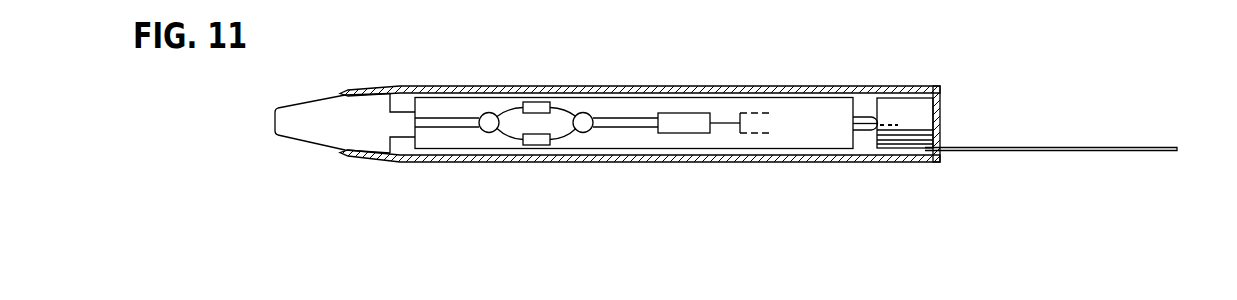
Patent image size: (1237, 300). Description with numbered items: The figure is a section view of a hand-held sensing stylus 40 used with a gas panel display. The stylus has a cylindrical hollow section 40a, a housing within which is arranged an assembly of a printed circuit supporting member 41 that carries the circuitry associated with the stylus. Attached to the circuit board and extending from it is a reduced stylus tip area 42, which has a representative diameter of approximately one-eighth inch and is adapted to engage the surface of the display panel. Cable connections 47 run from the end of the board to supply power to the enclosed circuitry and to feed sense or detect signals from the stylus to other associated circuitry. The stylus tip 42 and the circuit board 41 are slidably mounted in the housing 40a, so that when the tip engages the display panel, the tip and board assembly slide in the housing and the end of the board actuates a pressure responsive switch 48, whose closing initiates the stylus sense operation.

The hand-held stylus 40 is at (452, 72).
The cylindrical hollow section 40a is at (697, 88).
The printed circuit supporting member 41 is at (605, 104).
The stylus tip area 42 is at (273, 120).
The cable connections 47 is at (1060, 147).
The pressure responsive switch 48 is at (908, 107).